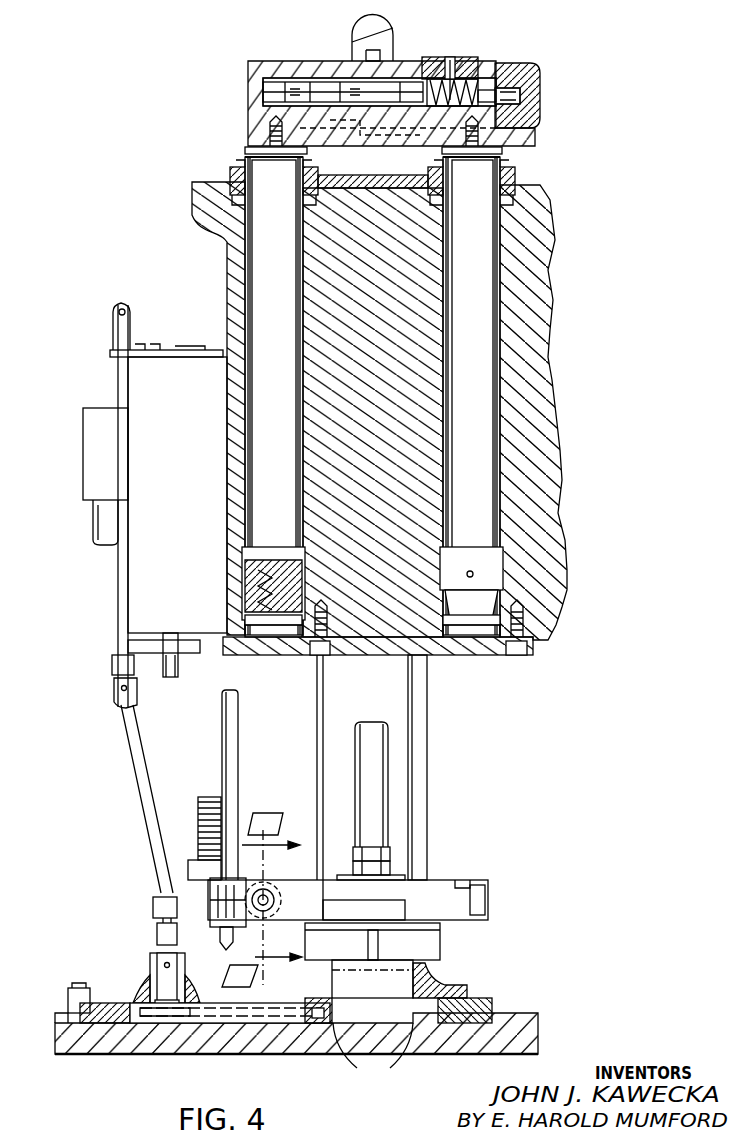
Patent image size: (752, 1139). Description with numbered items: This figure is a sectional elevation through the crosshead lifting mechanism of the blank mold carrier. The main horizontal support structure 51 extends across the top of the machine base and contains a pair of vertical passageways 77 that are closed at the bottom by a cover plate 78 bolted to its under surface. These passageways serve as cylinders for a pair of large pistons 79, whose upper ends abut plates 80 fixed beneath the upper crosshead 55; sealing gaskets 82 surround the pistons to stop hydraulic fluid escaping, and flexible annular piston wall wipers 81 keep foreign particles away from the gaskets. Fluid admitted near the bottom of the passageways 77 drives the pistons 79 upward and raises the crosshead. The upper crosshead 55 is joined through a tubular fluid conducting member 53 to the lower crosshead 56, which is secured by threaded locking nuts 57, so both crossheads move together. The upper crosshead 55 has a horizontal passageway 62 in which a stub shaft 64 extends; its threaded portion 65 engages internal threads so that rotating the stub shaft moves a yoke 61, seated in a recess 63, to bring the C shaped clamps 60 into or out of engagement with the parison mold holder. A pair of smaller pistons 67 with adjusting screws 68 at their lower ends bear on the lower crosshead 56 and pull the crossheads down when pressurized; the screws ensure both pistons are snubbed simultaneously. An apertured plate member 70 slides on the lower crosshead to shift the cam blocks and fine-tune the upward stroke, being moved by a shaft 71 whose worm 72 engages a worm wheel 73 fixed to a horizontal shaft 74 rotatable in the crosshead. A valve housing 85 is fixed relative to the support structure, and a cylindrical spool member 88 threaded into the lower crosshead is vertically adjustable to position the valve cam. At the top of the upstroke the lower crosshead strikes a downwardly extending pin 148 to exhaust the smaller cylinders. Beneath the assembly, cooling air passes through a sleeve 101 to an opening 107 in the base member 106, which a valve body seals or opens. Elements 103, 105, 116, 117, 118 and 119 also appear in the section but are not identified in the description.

The main horizontal support structure 51 is at (540, 390).
The tubular fluid conducting member 53 is at (395, 697).
The upper crosshead 55 is at (265, 62).
The lower crosshead 56 is at (462, 906).
The threaded locking nuts 57 is at (425, 940).
The C shaped clamps 60 is at (362, 24).
The yoke 61 is at (522, 70).
The horizontal passageway 62 is at (262, 98).
The recess 63 is at (548, 78).
The stub shaft 64 is at (548, 104).
The threaded portion 65 is at (462, 62).
The pistons 67 is at (372, 775).
The adjusting screws 68 is at (380, 855).
The apertured plate member 70 is at (455, 882).
The shaft 71 is at (222, 738).
The worm 72 is at (185, 896).
The worm wheel 73 is at (180, 912).
The horizontal shaft 74 is at (265, 902).
The vertical passageways 77 is at (258, 251).
The cover plate 78 is at (505, 650).
The pistons 79 is at (262, 283).
The plates 80 is at (250, 150).
The flexible annular piston wall wipers 81 is at (240, 174).
The sealing gaskets 82 is at (245, 190).
The valve housing 85 is at (157, 567).
The cylindrical spool member 88 is at (200, 828).
The sleeve 101 is at (440, 970).
The flange 103 is at (465, 990).
The plate 105 is at (490, 1005).
The base member 106 is at (540, 1030).
The opening 107 is at (340, 1055).
The seal 116 is at (325, 1023).
The channel 117 is at (240, 1023).
The passage 118 is at (150, 1023).
The pedestal 119 is at (165, 985).
The downwardly extending pin 148 is at (165, 677).